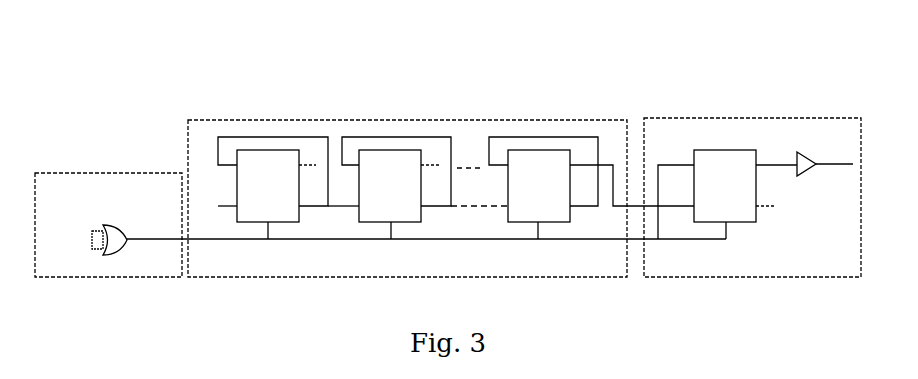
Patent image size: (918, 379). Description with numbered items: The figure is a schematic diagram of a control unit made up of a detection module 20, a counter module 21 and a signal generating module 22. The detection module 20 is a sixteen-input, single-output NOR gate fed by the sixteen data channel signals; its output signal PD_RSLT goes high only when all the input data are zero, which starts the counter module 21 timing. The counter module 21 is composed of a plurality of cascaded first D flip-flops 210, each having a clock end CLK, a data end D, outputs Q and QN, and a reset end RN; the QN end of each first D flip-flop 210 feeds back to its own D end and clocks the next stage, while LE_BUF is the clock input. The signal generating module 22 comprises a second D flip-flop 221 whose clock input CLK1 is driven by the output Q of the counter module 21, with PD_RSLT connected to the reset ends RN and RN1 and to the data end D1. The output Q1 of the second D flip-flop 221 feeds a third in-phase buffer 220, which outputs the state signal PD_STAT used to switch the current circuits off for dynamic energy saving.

The detection module 20 is at (100, 173).
The counter module 21 is at (441, 168).
The signal generating module 22 is at (752, 167).
The first D flip-flop 210 is at (263, 163).
The second D flip-flop 221 is at (732, 165).
The third in-phase buffer 220 is at (808, 170).